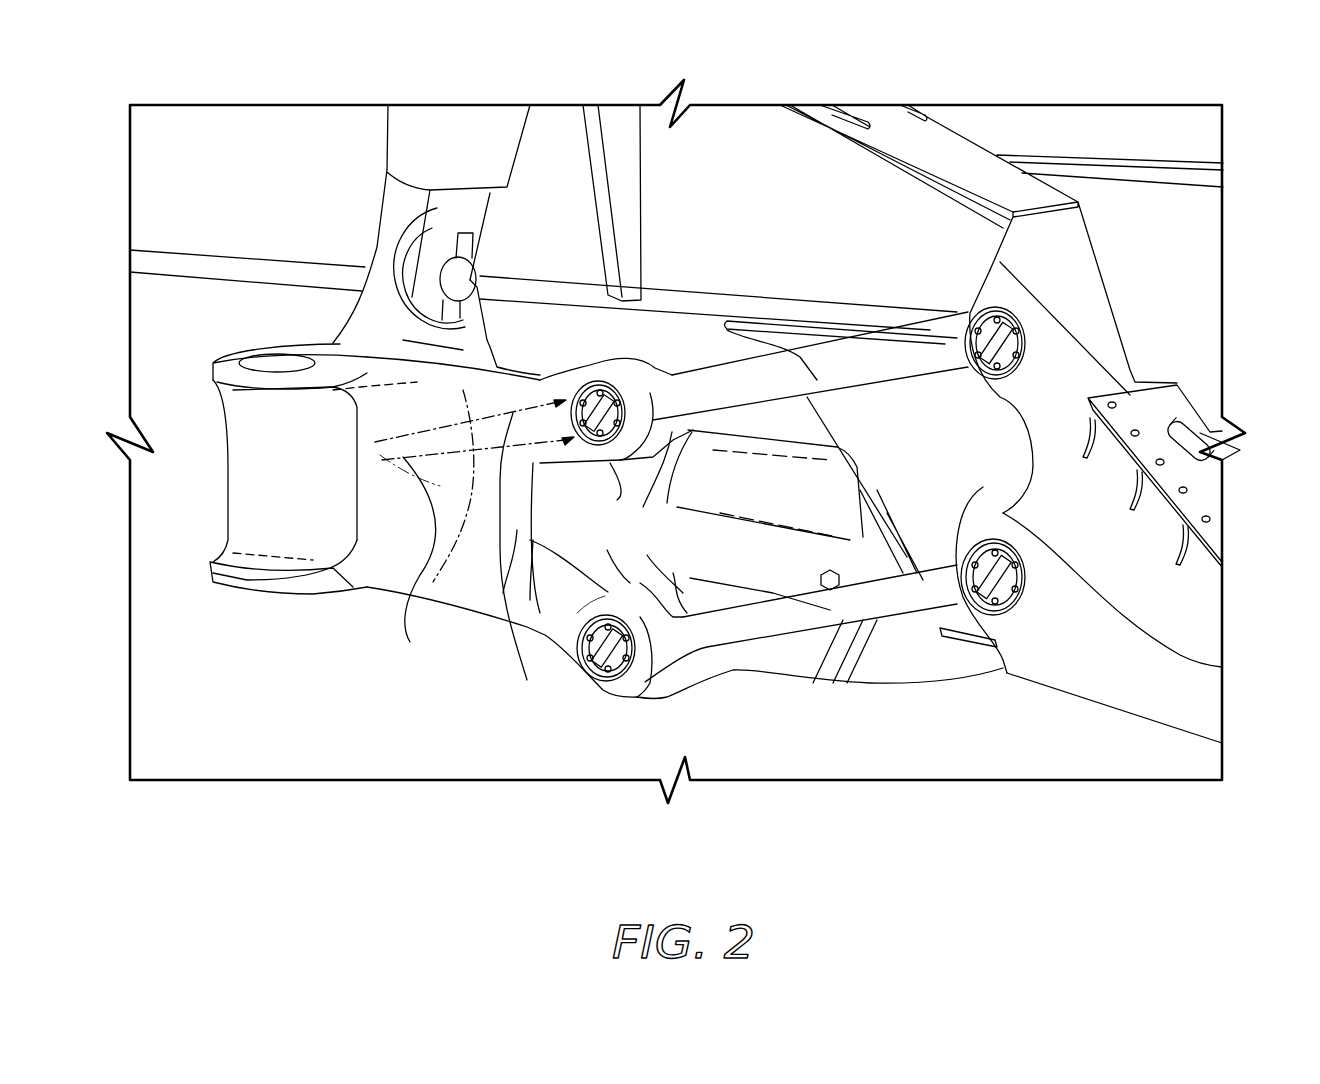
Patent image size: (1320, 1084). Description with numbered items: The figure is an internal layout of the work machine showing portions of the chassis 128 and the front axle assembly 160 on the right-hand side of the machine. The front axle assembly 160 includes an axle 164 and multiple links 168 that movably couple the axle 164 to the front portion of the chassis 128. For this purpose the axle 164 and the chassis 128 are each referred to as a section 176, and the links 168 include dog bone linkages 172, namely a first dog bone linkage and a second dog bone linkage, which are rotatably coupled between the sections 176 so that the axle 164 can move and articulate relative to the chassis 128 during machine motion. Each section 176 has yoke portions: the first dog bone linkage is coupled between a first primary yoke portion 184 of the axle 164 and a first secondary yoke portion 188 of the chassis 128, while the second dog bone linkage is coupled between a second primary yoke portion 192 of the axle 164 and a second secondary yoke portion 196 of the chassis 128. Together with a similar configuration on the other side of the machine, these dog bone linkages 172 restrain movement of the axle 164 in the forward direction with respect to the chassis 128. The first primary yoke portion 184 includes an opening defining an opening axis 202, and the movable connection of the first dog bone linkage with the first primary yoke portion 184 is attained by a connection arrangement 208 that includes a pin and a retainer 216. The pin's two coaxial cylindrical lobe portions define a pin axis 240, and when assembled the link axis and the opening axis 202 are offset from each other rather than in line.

The chassis 128 is at (1132, 712).
The front axle assembly 160 is at (564, 654).
The axle 164 is at (932, 662).
The links 168 is at (848, 372).
The dog bone linkages 172 is at (820, 372).
The section 176 is at (1161, 476).
The first primary yoke portion 184 is at (612, 380).
The first secondary yoke portion 188 is at (967, 313).
The second primary yoke portion 192 is at (640, 677).
The second secondary yoke portion 196 is at (1222, 668).
The opening axis 202 is at (400, 560).
The connection arrangement 208 is at (530, 600).
The retainer 216 is at (503, 593).
The pin axis 240 is at (410, 562).